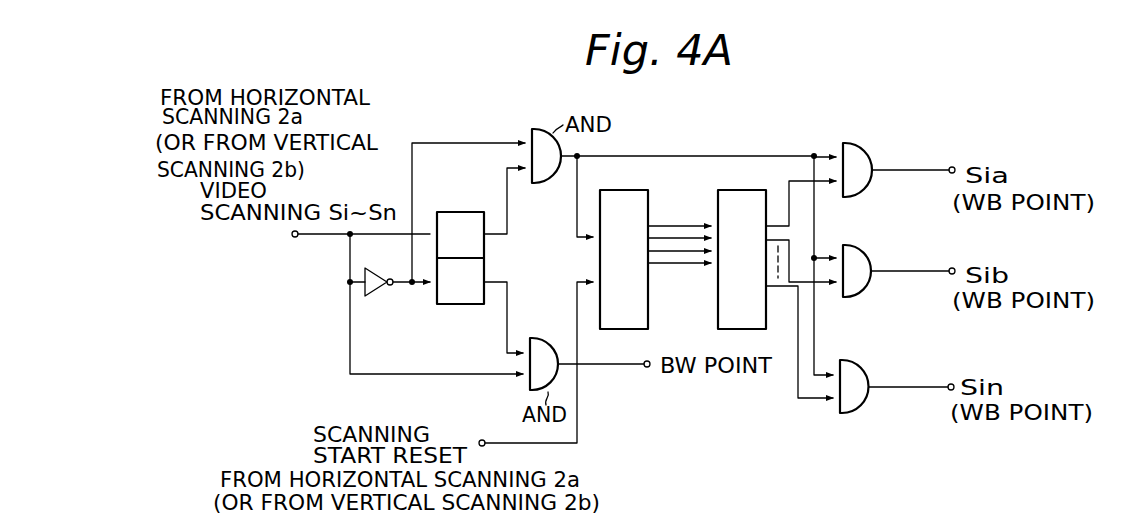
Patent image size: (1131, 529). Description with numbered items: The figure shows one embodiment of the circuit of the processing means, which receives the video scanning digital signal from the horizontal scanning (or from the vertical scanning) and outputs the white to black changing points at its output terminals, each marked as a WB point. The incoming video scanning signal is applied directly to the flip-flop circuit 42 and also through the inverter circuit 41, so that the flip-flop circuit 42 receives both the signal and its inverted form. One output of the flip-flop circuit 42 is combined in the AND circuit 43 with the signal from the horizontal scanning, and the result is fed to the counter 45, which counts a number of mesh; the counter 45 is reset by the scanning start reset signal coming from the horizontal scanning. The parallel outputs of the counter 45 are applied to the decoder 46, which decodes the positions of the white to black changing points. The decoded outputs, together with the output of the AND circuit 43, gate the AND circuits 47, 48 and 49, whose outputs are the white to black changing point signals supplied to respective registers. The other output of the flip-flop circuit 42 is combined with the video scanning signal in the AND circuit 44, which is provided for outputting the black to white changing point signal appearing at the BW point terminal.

The inverter circuit 41 is at (378, 295).
The flip-flop circuit 42 is at (484, 245).
The AND circuit 43 is at (548, 184).
The AND circuit 44 is at (547, 330).
The counter 45 is at (621, 190).
The decoder 46 is at (740, 190).
The AND circuit 47 is at (858, 146).
The AND circuit 48 is at (858, 248).
The AND circuit 49 is at (856, 363).